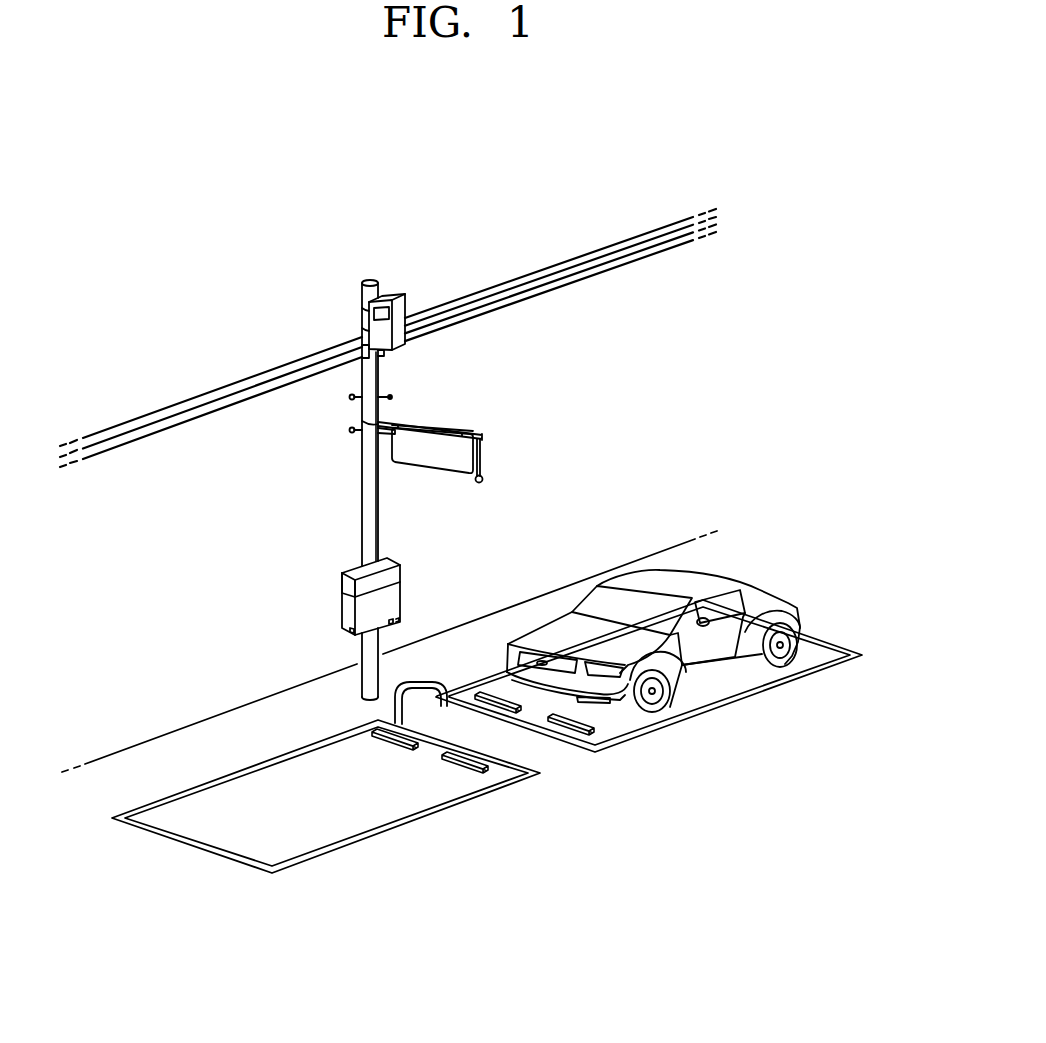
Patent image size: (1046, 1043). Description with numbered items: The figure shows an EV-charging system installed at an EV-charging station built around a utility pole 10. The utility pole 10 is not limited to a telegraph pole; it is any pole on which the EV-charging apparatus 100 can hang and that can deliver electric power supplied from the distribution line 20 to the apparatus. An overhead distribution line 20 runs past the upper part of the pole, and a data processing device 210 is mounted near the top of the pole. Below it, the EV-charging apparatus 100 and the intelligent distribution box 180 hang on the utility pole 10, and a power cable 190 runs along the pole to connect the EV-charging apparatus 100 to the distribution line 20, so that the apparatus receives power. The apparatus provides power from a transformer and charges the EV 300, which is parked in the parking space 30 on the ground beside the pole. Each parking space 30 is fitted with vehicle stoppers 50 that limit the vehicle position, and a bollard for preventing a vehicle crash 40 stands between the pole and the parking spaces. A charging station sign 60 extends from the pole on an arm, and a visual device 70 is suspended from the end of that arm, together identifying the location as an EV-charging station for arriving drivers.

The utility pole 10 is at (362, 469).
The distribution line 20 is at (171, 405).
The parking space 30 is at (407, 802).
The bollard for preventing a vehicle crash 40 is at (430, 683).
The vehicle stopper 50 is at (572, 733).
The charging station sign 60 is at (432, 453).
The visual device 70 is at (484, 479).
The EV-charging apparatus 100 is at (348, 612).
The intelligent distribution box 180 is at (350, 580).
The power cable 190 is at (376, 509).
The data processing device 210 is at (392, 300).
The EV 300 is at (713, 660).